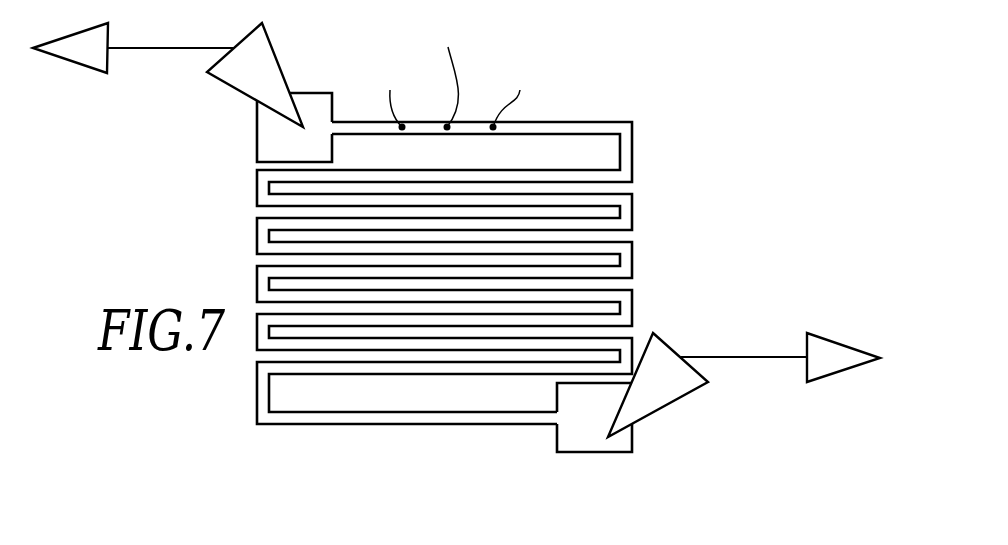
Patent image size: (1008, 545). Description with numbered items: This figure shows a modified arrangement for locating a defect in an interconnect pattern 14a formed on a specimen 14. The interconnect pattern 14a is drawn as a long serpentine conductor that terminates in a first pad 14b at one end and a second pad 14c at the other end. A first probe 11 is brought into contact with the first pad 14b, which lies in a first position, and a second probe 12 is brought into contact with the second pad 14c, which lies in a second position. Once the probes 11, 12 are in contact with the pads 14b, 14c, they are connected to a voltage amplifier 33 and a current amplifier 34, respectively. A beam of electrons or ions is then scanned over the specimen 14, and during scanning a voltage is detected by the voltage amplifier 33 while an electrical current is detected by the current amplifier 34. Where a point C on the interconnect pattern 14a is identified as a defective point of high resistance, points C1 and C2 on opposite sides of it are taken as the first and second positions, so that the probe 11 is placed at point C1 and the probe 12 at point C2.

The first probe 11 is at (677, 399).
The second probe 12 is at (277, 52).
The specimen 14 is at (436, 256).
The interconnect pattern 14a is at (392, 423).
The first pad 14b is at (580, 433).
The second pad 14c is at (265, 137).
The voltage amplifier 33 is at (836, 342).
The current amplifier 34 is at (70, 63).